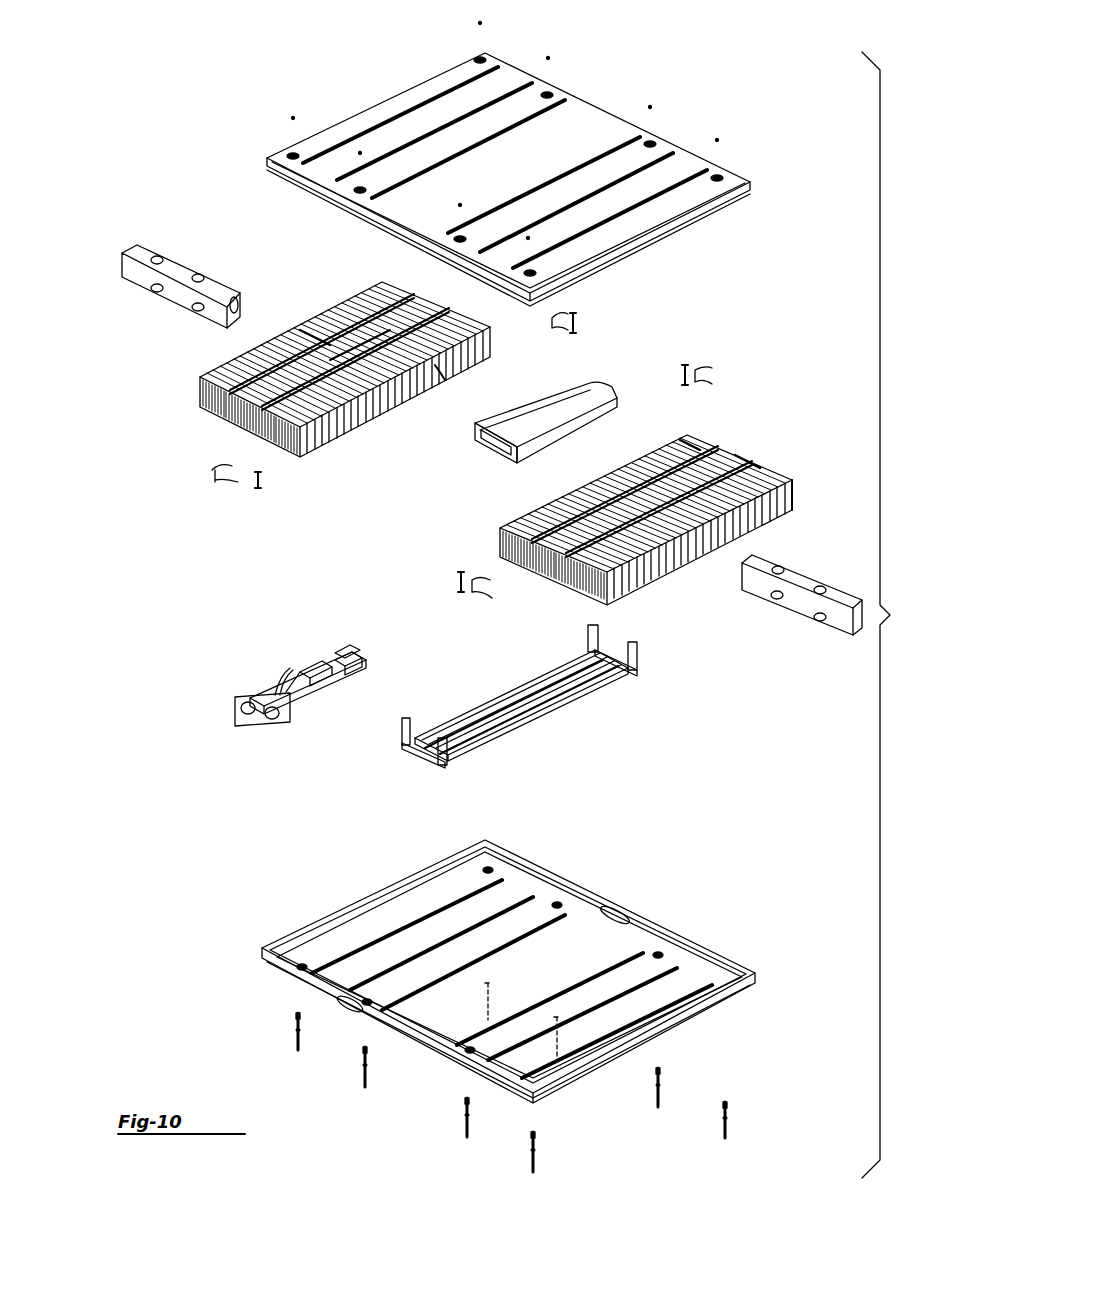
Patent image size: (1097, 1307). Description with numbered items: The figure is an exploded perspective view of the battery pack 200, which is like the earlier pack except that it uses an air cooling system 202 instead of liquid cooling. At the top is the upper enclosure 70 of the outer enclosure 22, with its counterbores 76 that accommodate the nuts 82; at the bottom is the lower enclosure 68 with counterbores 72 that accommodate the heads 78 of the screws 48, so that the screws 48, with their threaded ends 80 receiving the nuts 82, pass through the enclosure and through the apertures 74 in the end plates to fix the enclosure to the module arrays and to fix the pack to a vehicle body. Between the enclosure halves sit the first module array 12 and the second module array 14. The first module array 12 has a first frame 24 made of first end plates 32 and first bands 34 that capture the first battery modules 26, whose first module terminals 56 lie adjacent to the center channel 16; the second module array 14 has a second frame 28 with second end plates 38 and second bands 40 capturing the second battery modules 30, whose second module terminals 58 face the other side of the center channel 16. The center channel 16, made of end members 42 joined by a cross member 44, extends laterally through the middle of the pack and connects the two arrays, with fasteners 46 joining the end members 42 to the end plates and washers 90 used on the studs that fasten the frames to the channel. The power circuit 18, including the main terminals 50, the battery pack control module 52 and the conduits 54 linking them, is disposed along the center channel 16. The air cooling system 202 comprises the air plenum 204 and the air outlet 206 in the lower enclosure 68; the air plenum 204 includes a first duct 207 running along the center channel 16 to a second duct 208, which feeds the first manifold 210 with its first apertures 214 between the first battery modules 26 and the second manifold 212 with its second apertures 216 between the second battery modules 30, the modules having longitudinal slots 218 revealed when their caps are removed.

The battery pack 200 is at (898, 615).
The outer enclosure 22 is at (508, 155).
The upper enclosure 70 is at (407, 100).
The counterbores 76 is at (293, 152).
The nuts 82 is at (293, 118).
The air cooling system 202 is at (167, 245).
The first manifold 210 is at (182, 300).
The first apertures 214 is at (182, 261).
The first module array 12 is at (328, 353).
The first end plates 32 is at (203, 403).
The apertures 74 is at (203, 372).
The first bands 34 is at (303, 325).
The slots 218 is at (356, 300).
The first battery modules 26 is at (381, 290).
The first frame 24 is at (442, 304).
The first module terminals 56 is at (441, 372).
The fasteners 46 is at (216, 482).
The washers 90 is at (260, 488).
The air plenum 204 is at (536, 398).
The first duct 207 is at (542, 413).
The second duct 208 is at (480, 445).
The second module array 14 is at (674, 511).
The second end plates 38 is at (692, 434).
The second bands 40 is at (605, 497).
The second module terminals 58 is at (690, 438).
The second frame 28 is at (748, 455).
The second battery modules 30 is at (786, 505).
The second manifold 212 is at (790, 585).
The second apertures 216 is at (820, 584).
The power circuit 18 is at (296, 688).
The battery pack control module 52 is at (338, 652).
The main terminals 50 is at (246, 697).
The conduits 54 is at (286, 690).
The center channel 16 is at (504, 708).
The cross member 44 is at (478, 718).
The end members 42 is at (398, 745).
The lower enclosure 68 is at (508, 951).
The air outlet 206 is at (348, 998).
The counterbores 72 is at (302, 964).
The heads 78 is at (298, 1050).
The threaded ends 80 is at (297, 1018).
The screws 48 is at (300, 1035).